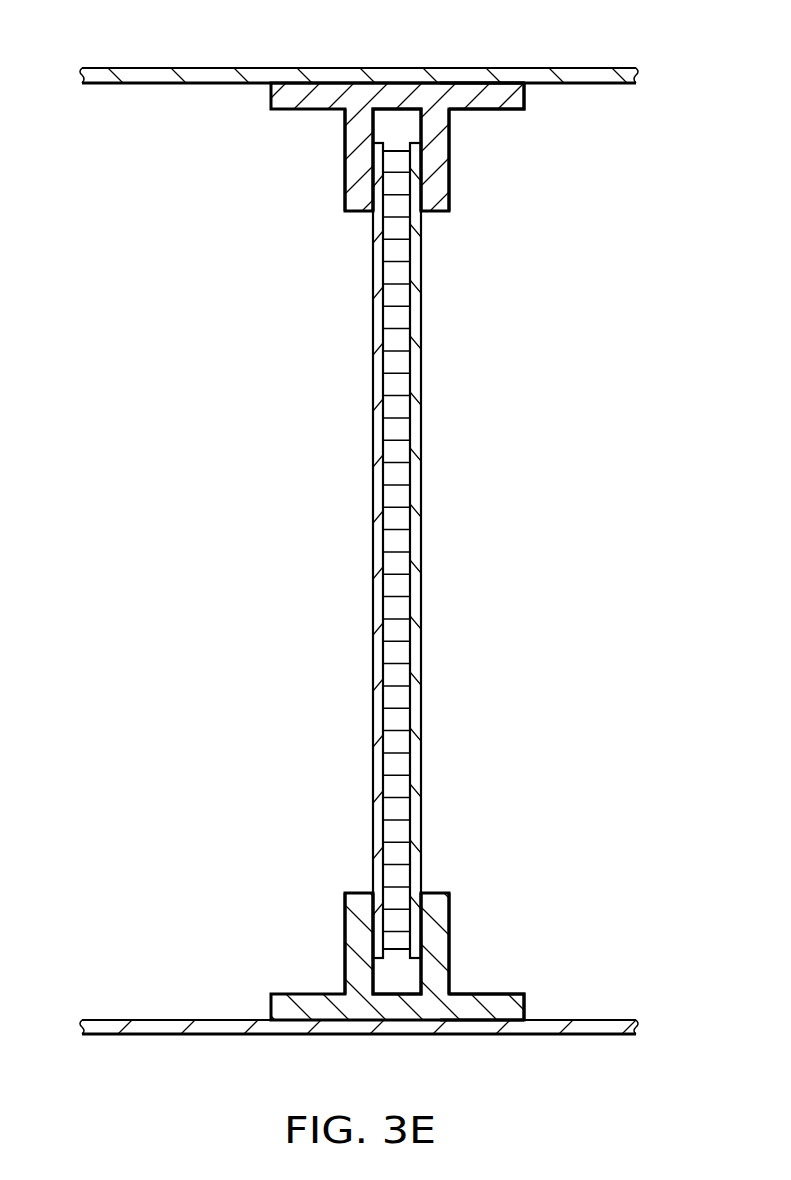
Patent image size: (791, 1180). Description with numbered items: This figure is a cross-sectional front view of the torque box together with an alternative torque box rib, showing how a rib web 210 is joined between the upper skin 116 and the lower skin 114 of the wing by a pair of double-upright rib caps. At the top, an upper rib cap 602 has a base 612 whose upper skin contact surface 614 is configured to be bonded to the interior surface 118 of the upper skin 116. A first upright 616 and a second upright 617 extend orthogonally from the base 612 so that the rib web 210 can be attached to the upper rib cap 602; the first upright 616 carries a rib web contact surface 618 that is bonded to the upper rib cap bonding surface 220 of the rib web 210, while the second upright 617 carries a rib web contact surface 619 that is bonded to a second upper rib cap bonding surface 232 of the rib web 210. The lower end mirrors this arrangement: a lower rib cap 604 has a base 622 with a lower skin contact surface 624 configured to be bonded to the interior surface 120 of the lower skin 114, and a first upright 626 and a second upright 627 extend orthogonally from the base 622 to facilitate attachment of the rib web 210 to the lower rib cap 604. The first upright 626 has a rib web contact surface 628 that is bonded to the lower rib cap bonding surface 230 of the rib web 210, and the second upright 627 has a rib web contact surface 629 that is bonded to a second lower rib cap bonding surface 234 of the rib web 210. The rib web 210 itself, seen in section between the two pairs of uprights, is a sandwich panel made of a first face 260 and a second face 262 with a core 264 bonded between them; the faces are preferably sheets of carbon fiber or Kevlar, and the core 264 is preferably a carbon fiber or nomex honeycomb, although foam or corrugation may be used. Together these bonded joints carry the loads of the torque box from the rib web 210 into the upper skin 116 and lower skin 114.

The lower skin 114 is at (158, 1027).
The upper skin 116 is at (208, 68).
The interior surface of upper skin 118 is at (292, 88).
The interior surface of lower skin 120 is at (300, 1015).
The rib web 210 is at (411, 550).
The upper rib cap bonding surface 220 is at (350, 210).
The lower rib cap bonding surface 230 is at (370, 900).
The second upper rib cap bonding surface 232 is at (423, 147).
The second lower rib cap bonding surface 234 is at (420, 953).
The first face 260 is at (372, 543).
The second face 262 is at (423, 433).
The core 264 is at (397, 605).
The upper rib cap 602 is at (260, 91).
The lower rib cap 604 is at (260, 1002).
The base of upper rib cap 612 is at (513, 98).
The upper skin contact surface 614 is at (473, 82).
The first upright of upper rib cap 616 is at (355, 138).
The second upright of upper rib cap 617 is at (449, 195).
The rib web contact surface of first upright 618 is at (380, 160).
The rib web contact surface of second upright 619 is at (428, 212).
The base of lower rib cap 622 is at (515, 1007).
The lower skin contact surface 624 is at (478, 1020).
The first upright of lower rib cap 626 is at (353, 963).
The second upright of lower rib cap 627 is at (450, 907).
The rib web contact surface of first lower upright 628 is at (382, 942).
The rib web contact surface of second lower upright 629 is at (418, 920).